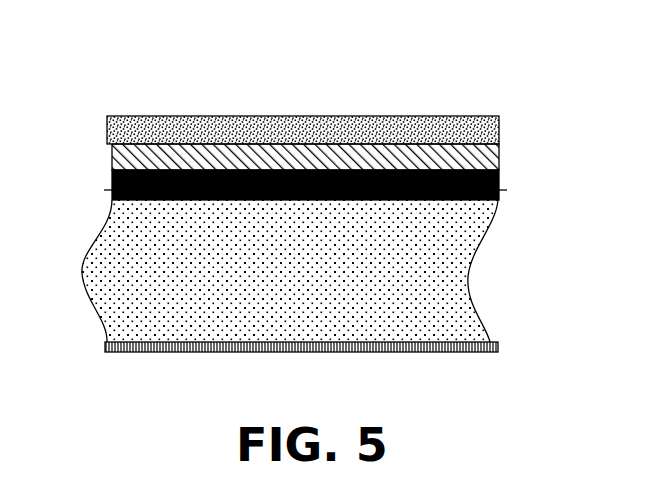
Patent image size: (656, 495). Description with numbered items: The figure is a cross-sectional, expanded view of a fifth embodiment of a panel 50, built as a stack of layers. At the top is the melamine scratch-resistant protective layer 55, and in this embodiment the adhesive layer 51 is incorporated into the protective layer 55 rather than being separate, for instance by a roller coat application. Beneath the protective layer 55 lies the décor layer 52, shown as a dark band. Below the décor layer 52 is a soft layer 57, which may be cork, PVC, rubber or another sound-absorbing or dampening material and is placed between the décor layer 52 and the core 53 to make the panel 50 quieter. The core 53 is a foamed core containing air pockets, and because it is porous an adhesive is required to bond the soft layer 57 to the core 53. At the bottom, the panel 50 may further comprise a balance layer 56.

The panel 50 is at (133, 88).
The protective layer 55 is at (472, 116).
The adhesive layer 51 is at (500, 139).
The décor layer 52 is at (500, 168).
The core 53 is at (117, 247).
The soft layer 57 is at (113, 183).
The balance layer 56 is at (107, 343).